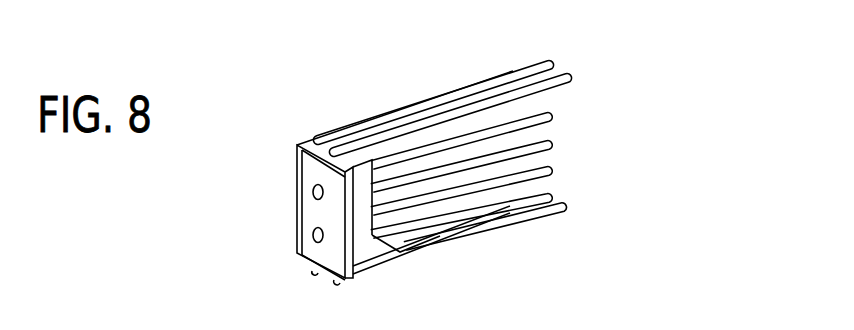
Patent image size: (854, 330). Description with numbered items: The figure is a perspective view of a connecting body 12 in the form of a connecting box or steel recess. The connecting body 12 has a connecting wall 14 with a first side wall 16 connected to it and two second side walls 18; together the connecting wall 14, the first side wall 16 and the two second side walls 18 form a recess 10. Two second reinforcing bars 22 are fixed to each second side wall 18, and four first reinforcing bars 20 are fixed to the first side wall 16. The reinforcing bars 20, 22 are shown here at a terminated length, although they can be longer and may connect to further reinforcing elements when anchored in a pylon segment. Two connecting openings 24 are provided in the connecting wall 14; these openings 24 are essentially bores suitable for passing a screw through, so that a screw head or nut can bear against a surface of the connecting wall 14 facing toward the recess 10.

The recess 10 is at (362, 160).
The connecting body 12 is at (354, 59).
The connecting wall 14 is at (307, 220).
The first side wall 16 is at (368, 185).
The second side wall 18 is at (300, 138).
The first reinforcing bar 20 is at (552, 100).
The second reinforcing bar 22 is at (506, 100).
The connecting opening 24 is at (313, 191).